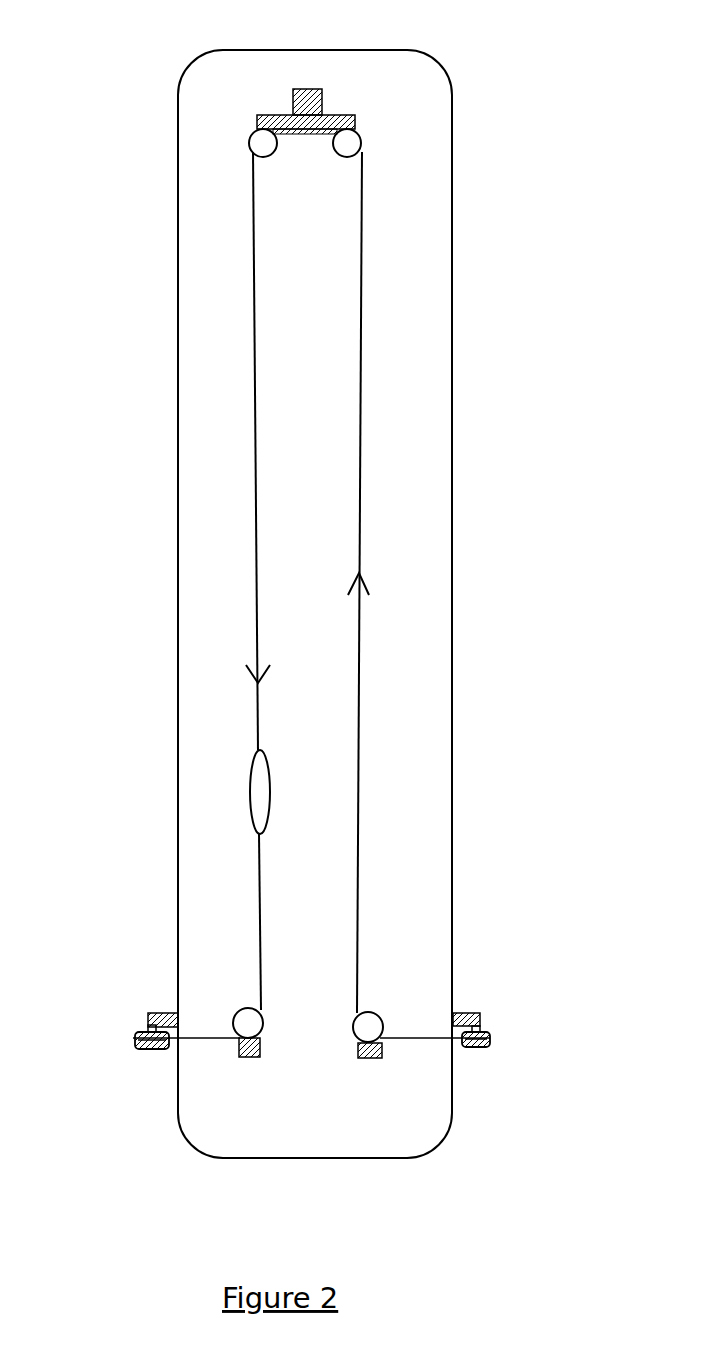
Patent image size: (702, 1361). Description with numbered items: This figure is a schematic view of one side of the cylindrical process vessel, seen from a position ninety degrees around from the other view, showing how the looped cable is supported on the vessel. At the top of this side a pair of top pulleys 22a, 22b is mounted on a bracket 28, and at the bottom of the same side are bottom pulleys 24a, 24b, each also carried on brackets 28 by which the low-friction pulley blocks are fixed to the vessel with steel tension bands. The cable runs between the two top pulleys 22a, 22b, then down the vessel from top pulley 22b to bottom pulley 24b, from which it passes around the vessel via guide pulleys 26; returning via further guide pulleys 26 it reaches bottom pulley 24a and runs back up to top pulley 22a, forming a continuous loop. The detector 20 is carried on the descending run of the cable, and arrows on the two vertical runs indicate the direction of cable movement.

The detector 20 is at (252, 786).
The top pulley 22a is at (347, 143).
The top pulley 22b is at (250, 145).
The bottom pulley 24a is at (368, 1028).
The bottom pulley 24b is at (252, 1028).
The guide pulleys 26 is at (133, 1043).
The brackets 28 is at (312, 100).